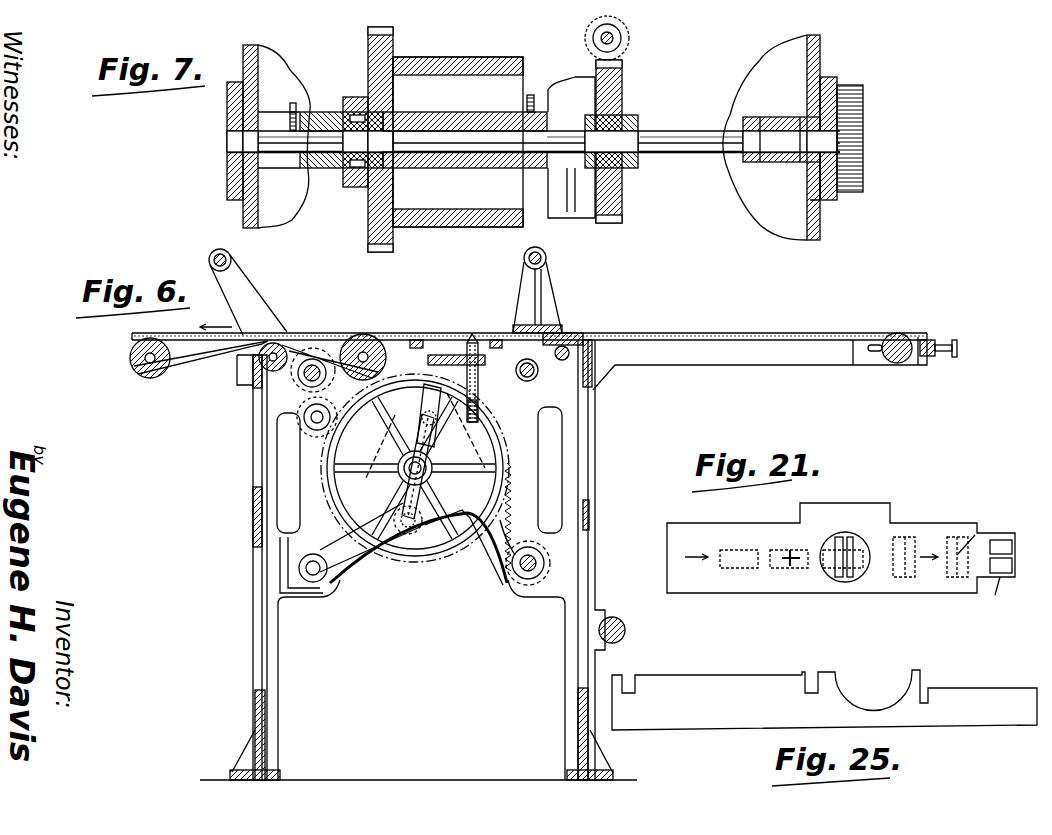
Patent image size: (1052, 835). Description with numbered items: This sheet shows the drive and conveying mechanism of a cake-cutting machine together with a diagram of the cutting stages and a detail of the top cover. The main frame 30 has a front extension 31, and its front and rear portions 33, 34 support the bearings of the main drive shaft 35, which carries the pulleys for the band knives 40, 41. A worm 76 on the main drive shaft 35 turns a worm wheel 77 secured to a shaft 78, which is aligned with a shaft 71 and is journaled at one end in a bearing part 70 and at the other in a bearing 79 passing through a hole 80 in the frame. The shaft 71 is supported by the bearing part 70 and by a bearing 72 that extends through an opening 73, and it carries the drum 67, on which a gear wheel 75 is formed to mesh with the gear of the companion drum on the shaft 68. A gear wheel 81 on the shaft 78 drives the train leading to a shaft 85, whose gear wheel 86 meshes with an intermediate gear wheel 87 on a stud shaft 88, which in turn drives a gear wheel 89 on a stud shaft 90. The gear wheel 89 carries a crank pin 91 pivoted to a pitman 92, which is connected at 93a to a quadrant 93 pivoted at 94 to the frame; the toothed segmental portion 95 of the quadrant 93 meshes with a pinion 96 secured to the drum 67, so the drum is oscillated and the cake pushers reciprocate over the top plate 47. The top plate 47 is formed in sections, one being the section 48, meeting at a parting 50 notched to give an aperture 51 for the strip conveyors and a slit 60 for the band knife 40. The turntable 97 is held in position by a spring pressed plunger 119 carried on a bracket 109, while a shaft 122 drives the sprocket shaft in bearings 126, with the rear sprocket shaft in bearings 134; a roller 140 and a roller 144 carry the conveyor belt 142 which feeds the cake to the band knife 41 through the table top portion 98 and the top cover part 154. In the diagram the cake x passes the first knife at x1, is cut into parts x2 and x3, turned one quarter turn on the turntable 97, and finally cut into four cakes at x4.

In FIG. 7, the main frame 30 is at (830, 62).
In FIG. 6, the main frame 30 is at (418, 726).
In FIG. 6, the front extension 31 is at (750, 365).
In FIG. 6, the front portion of main frame 33 is at (592, 515).
In FIG. 6, the rear portion of main frame 34 is at (253, 517).
In FIG. 7, the main drive shaft 35 is at (613, 35).
In FIG. 21, the band knife 40 is at (790, 550).
In FIG. 21, the band knife 41 is at (980, 533).
In FIG. 6, the top plate 47 is at (290, 333).
In FIG. 25, the top plate 47 is at (696, 728).
In FIG. 25, the section of top plate 48 is at (702, 700).
In FIG. 25, the parting 50 is at (730, 675).
In FIG. 25, the aperture 51 is at (630, 675).
In FIG. 25, the slit 60 is at (790, 672).
In FIG. 7, the drum 67 is at (470, 227).
In FIG. 6, the shaft 68 is at (625, 630).
In FIG. 7, the bearing part 70 is at (530, 185).
In FIG. 7, the shaft 71 is at (332, 140).
In FIG. 6, the shaft 71 is at (523, 580).
In FIG. 7, the bearing 72 is at (232, 168).
In FIG. 7, the opening 73 is at (256, 182).
In FIG. 7, the gear wheel 75 is at (388, 37).
In FIG. 7, the worm 76 is at (626, 45).
In FIG. 7, the worm wheel 77 is at (622, 75).
In FIG. 7, the shaft 78 is at (690, 158).
In FIG. 7, the bearing 79 is at (790, 162).
In FIG. 7, the hole 80 is at (818, 180).
In FIG. 7, the gear wheel 81 is at (863, 165).
In FIG. 6, the shaft 85 is at (303, 376).
In FIG. 6, the gear wheel 86 is at (318, 372).
In FIG. 6, the intermediate gear wheel 87 is at (300, 418).
In FIG. 6, the stud shaft 88 is at (306, 430).
In FIG. 6, the gear wheel 89 is at (335, 500).
In FIG. 6, the stud shaft 90 is at (400, 468).
In FIG. 6, the crank pin 91 is at (412, 408).
In FIG. 6, the pitman 92 is at (440, 455).
In FIG. 6, the quadrant 93 is at (445, 545).
In FIG. 6, the pivotal connection 93a is at (405, 535).
In FIG. 6, the pivot 94 is at (315, 580).
In FIG. 6, the segmental portion 95 is at (505, 528).
In FIG. 7, the pinion 96 is at (356, 187).
In FIG. 6, the pinion 96 is at (562, 505).
In FIG. 6, the turntable 97 is at (475, 332).
In FIG. 21, the turntable 97 is at (858, 540).
In FIG. 6, the table top portion 98 is at (548, 333).
In FIG. 25, the table top portion 98 is at (905, 705).
In FIG. 6, the bracket 109 is at (485, 362).
In FIG. 6, the spring pressed plunger 119 is at (478, 400).
In FIG. 6, the shaft 122 is at (535, 374).
In FIG. 6, the bearing 126 is at (545, 282).
In FIG. 6, the bearing 134 is at (244, 285).
In FIG. 6, the roller 140 is at (386, 354).
In FIG. 6, the conveyor belt 142 is at (168, 332).
In FIG. 6, the roller 144 is at (140, 374).
In FIG. 25, the top cover part 154 is at (979, 703).
In FIG. 21, the cake x is at (740, 568).
In FIG. 21, the cake position x1 is at (786, 568).
In FIG. 21, the cake part x2 is at (840, 540).
In FIG. 21, the cake part x3 is at (823, 567).
In FIG. 21, the cut cakes x4 is at (995, 593).